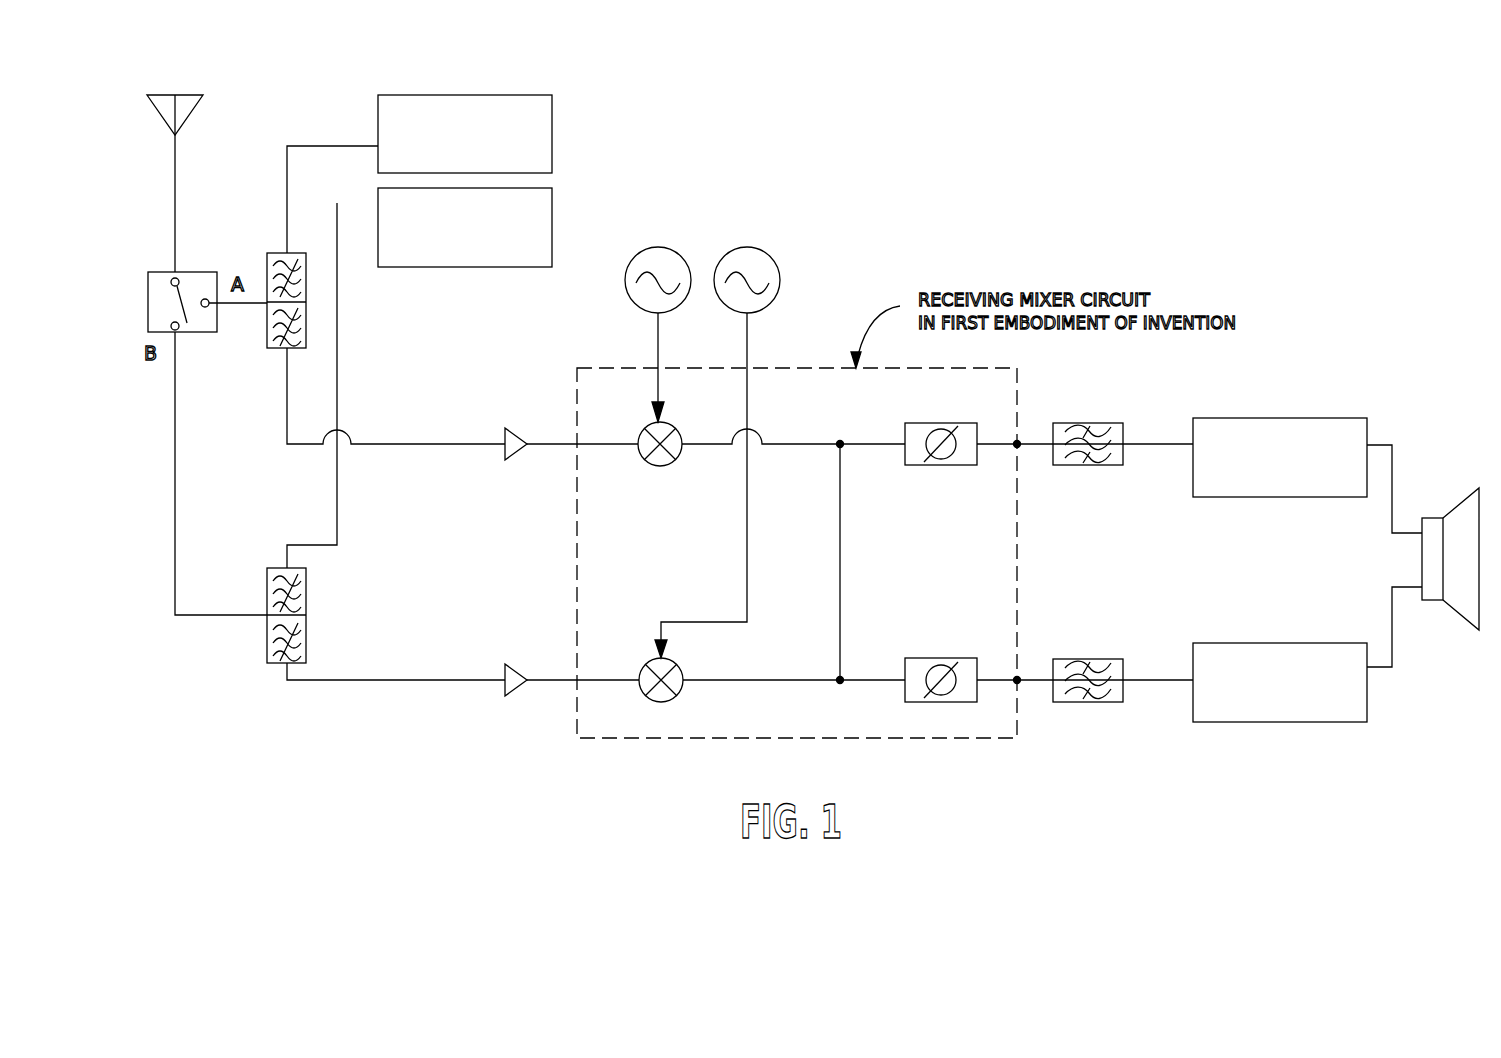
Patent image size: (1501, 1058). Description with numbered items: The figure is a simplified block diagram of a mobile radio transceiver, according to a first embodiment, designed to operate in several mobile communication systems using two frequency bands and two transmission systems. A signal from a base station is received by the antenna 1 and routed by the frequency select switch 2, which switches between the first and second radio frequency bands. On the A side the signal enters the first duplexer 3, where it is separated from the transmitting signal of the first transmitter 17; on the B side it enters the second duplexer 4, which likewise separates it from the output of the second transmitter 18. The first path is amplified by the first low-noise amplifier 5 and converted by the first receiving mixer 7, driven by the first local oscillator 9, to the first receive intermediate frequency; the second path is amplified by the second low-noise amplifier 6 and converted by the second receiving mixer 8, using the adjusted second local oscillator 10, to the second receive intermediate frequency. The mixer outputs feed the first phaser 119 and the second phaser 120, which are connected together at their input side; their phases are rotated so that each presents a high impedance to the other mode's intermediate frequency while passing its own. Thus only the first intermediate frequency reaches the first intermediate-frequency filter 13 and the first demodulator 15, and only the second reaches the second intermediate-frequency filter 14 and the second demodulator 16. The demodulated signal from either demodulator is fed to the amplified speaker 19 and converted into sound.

The antenna 1 is at (190, 95).
The frequency select switch 2 is at (148, 284).
The first duplexer 3 is at (267, 263).
The second duplexer 4 is at (267, 584).
The first low-noise amplifier 5 is at (524, 432).
The second low-noise amplifier 6 is at (524, 668).
The first receiving mixer 7 is at (638, 438).
The second receiving mixer 8 is at (645, 666).
The first local oscillator 9 is at (644, 252).
The second local oscillator 10 is at (730, 252).
The first intermediate-frequency filter 13 is at (1065, 423).
The second intermediate-frequency filter 14 is at (1110, 659).
The first demodulator 15 is at (1265, 418).
The second demodulator 16 is at (1265, 643).
The first transmitter 17 is at (378, 134).
The second transmitter 18 is at (378, 198).
The amplified speaker 19 is at (1465, 500).
The first phaser (phase shifter) 119 is at (912, 423).
The second phaser (phase shifter) 120 is at (913, 657).